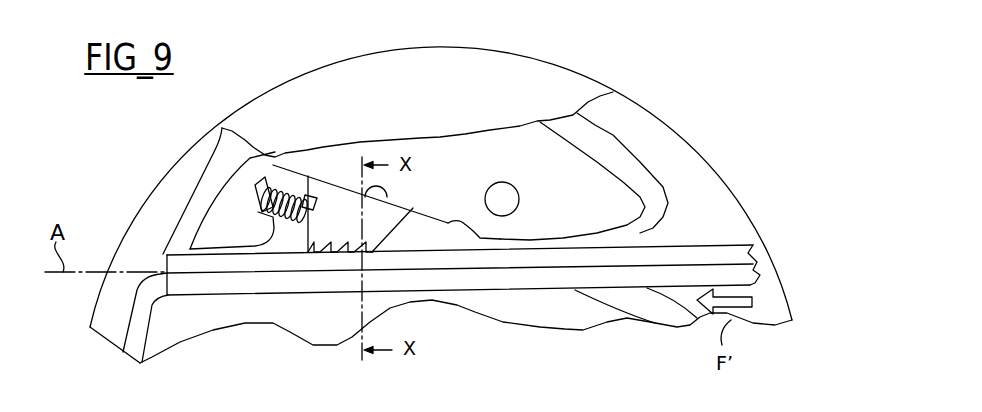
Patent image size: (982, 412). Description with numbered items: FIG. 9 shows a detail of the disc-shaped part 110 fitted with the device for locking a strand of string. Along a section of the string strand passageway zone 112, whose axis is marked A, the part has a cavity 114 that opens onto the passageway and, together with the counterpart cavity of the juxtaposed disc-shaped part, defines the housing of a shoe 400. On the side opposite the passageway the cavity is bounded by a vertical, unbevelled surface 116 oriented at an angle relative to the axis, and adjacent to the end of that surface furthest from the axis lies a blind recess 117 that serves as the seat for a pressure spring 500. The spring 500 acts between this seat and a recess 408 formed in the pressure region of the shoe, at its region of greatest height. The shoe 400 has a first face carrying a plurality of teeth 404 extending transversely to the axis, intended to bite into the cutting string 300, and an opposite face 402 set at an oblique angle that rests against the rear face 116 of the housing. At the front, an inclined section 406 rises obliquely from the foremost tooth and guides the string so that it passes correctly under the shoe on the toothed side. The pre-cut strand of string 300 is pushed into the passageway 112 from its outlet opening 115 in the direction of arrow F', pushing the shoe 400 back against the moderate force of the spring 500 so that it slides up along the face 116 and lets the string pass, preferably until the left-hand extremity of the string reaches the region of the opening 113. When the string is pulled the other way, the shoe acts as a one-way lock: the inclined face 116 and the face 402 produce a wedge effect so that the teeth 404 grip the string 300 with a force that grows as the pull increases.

The disc-shaped part 110 is at (104, 222).
The string strand passageway zone 112 is at (562, 289).
The opening 113 is at (155, 258).
The cavity 114 is at (425, 210).
The outlet opening 115 is at (625, 236).
The vertical unbevelled surface 116 is at (440, 222).
The blind recess 117 is at (247, 217).
The cutting string 300 is at (223, 285).
The shoe 400 is at (332, 200).
The opposite face 402 is at (387, 197).
The teeth 404 is at (348, 252).
The inclined section 406 is at (410, 210).
The recess 408 is at (304, 176).
The pressure spring 500 is at (292, 171).